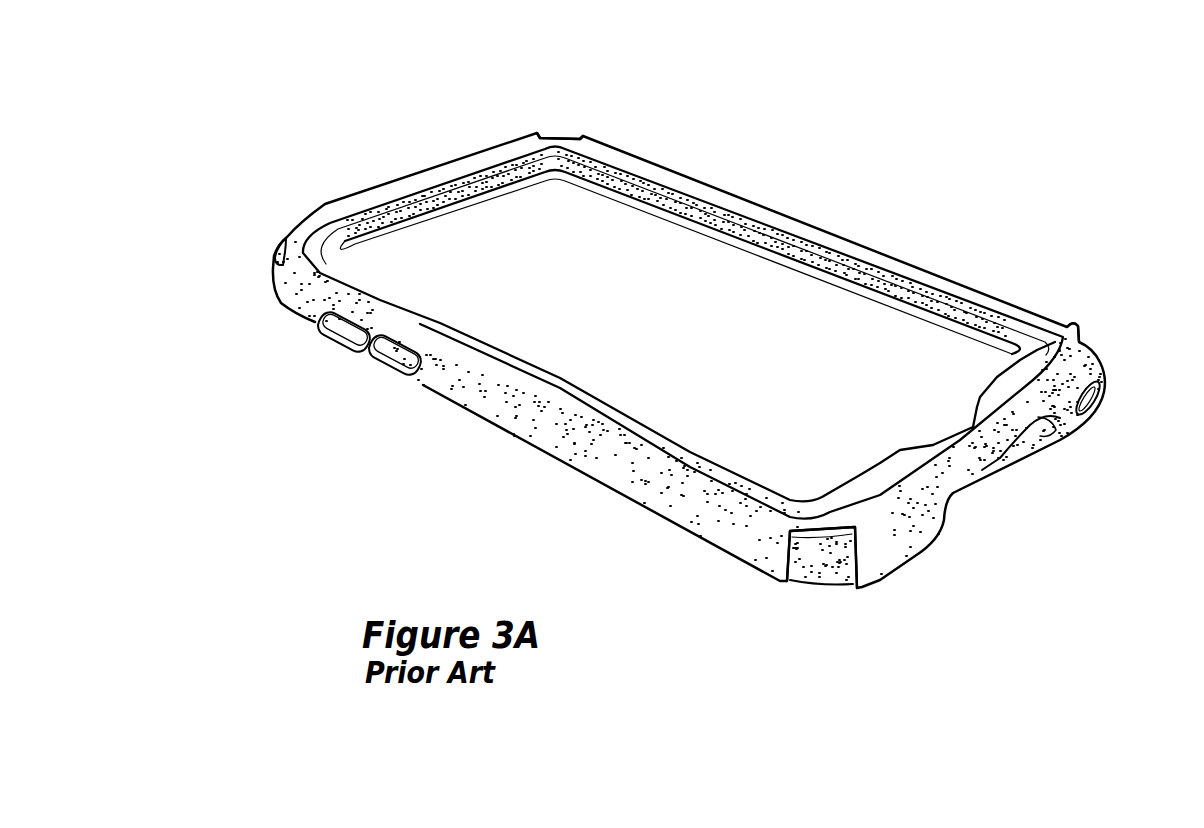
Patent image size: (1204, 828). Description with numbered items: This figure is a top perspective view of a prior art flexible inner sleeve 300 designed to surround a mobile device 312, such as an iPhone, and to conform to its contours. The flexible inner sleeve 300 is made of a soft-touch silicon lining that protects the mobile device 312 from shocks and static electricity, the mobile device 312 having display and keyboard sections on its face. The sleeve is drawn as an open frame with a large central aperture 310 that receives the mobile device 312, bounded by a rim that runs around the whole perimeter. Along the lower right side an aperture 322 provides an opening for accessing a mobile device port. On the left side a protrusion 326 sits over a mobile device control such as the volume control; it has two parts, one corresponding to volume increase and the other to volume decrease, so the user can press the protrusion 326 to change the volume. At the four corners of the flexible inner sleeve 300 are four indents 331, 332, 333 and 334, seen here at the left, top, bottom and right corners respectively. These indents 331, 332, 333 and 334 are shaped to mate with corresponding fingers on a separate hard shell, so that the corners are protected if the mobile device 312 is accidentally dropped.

The flexible inner sleeve 300 is at (872, 134).
The aperture 310 is at (705, 413).
The mobile device 312 is at (790, 268).
The aperture 322 is at (990, 464).
The protrusion 326 is at (345, 344).
The indent 331 is at (283, 241).
The indent 332 is at (540, 133).
The indent 333 is at (822, 555).
The indent 334 is at (1080, 338).